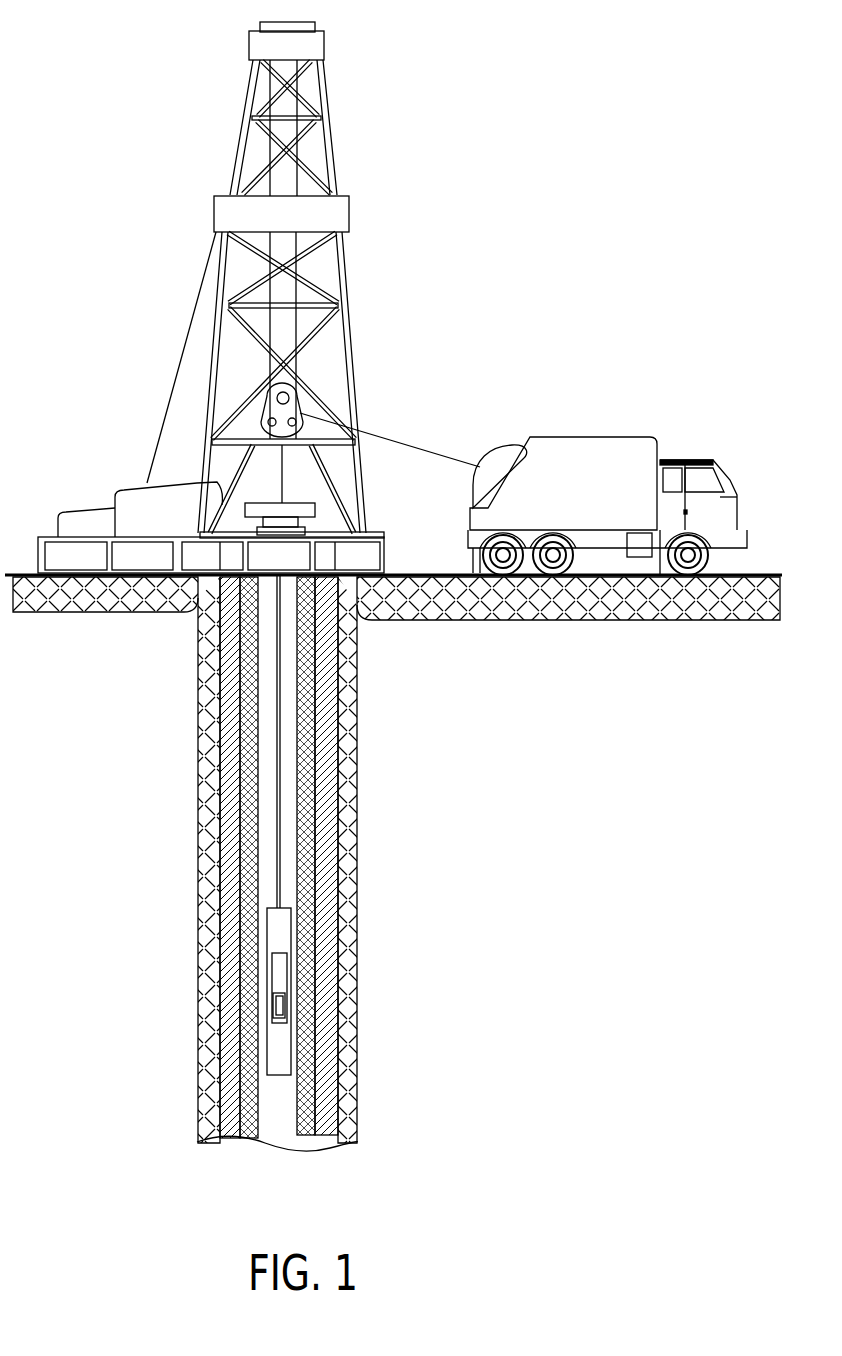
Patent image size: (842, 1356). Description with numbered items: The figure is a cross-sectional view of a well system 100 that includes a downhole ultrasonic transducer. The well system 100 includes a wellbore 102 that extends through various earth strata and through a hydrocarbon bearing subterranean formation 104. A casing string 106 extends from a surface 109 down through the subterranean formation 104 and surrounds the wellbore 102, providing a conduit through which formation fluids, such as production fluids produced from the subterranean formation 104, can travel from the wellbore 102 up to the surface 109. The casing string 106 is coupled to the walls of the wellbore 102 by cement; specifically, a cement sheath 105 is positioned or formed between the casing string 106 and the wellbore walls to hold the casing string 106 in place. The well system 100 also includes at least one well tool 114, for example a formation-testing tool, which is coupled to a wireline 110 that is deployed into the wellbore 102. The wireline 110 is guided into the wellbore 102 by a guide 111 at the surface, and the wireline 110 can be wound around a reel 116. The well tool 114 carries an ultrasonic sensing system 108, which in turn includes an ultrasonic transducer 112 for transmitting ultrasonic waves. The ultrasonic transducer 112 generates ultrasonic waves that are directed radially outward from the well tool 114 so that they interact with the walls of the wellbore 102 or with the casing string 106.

The well system 100 is at (528, 240).
The wellbore 102 is at (262, 706).
The subterranean formation 104 is at (385, 745).
The cement sheath 105 is at (326, 893).
The casing string 106 is at (310, 858).
The ultrasonic sensing system 108 is at (281, 978).
The surface 109 is at (316, 509).
The wireline 110 is at (387, 437).
The guide 111 is at (298, 394).
The ultrasonic transducer 112 is at (281, 1007).
The well tool 114 is at (292, 949).
The reel 116 is at (513, 444).